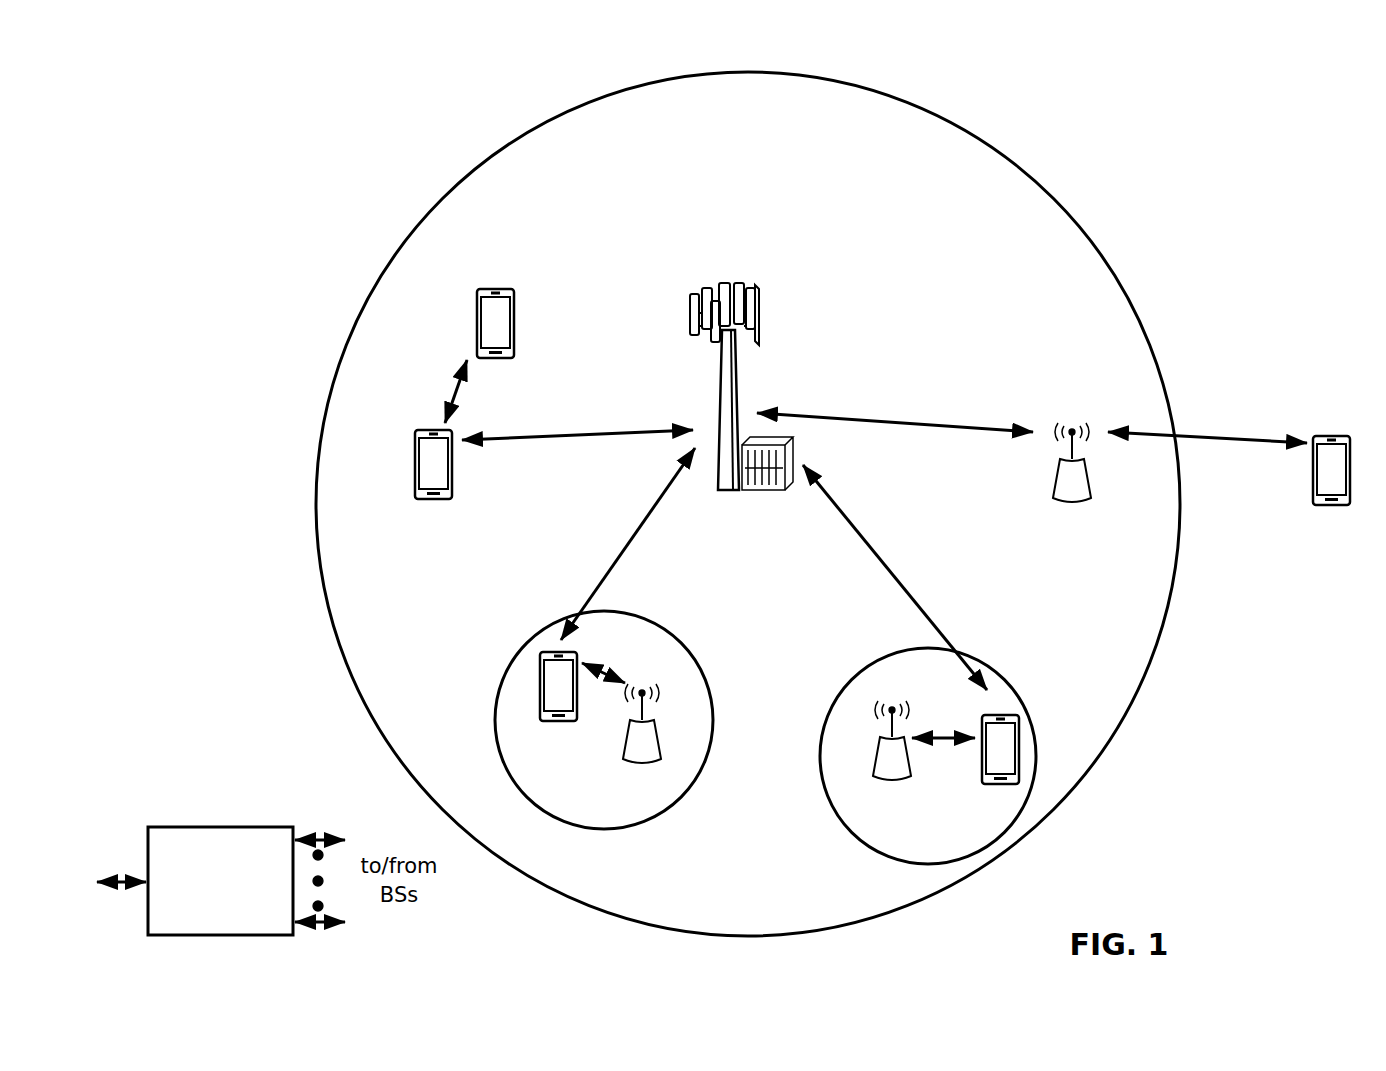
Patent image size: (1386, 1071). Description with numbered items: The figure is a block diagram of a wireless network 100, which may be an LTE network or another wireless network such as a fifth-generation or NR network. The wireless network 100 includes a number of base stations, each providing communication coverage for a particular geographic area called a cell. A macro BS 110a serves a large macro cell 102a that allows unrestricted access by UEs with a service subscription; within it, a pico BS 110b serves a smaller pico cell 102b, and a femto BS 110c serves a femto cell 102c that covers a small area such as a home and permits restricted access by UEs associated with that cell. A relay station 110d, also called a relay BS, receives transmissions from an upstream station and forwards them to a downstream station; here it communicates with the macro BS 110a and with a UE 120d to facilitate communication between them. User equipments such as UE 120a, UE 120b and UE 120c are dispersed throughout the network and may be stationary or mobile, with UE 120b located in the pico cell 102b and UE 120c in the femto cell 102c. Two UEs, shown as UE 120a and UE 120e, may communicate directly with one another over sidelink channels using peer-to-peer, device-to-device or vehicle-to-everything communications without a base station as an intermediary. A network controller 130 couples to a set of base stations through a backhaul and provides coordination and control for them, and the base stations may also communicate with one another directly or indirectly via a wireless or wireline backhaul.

The wireless network 100 is at (198, 64).
The macro cell 102a is at (1038, 183).
The pico cell 102b is at (698, 655).
The femto cell 102c is at (865, 668).
The macro BS 110a is at (735, 278).
The pico BS 110b is at (663, 752).
The femto BS 110c is at (876, 770).
The relay station 110d is at (1073, 416).
The UE 120a is at (414, 462).
The UE 120b is at (548, 722).
The UE 120c is at (985, 785).
The UE 120d is at (1346, 434).
The UE 120e is at (477, 308).
The network controller 130 is at (220, 826).